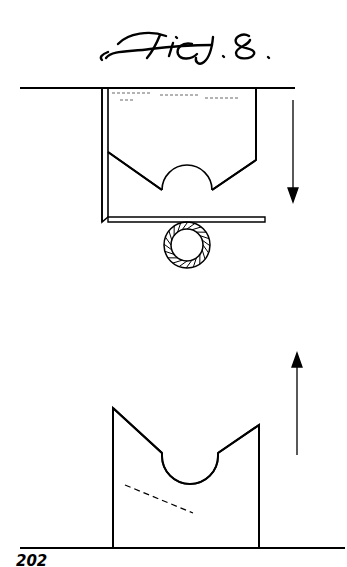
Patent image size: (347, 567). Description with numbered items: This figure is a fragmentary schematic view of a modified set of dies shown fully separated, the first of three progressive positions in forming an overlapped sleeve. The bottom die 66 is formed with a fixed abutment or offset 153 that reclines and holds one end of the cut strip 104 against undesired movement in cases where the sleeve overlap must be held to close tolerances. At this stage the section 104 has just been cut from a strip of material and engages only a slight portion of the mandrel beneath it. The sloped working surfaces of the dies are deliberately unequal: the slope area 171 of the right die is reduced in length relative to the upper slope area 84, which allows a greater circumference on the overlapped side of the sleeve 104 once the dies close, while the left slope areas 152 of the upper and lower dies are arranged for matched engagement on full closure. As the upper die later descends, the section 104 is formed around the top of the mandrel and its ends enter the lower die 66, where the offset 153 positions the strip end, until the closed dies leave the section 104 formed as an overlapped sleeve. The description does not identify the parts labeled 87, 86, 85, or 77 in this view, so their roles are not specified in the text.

The upper block 87 is at (242, 108).
The side plate 86 is at (102, 139).
The semicircular notch 85 is at (213, 148).
The upper slope area 84 is at (222, 187).
The left slope areas 152 is at (121, 169).
The cut strip section 104 is at (264, 222).
The rod 77 is at (203, 264).
The fixed abutment or offset 153 is at (200, 474).
The slope area of the right die 171 is at (248, 425).
The bottom die 66 is at (243, 513).